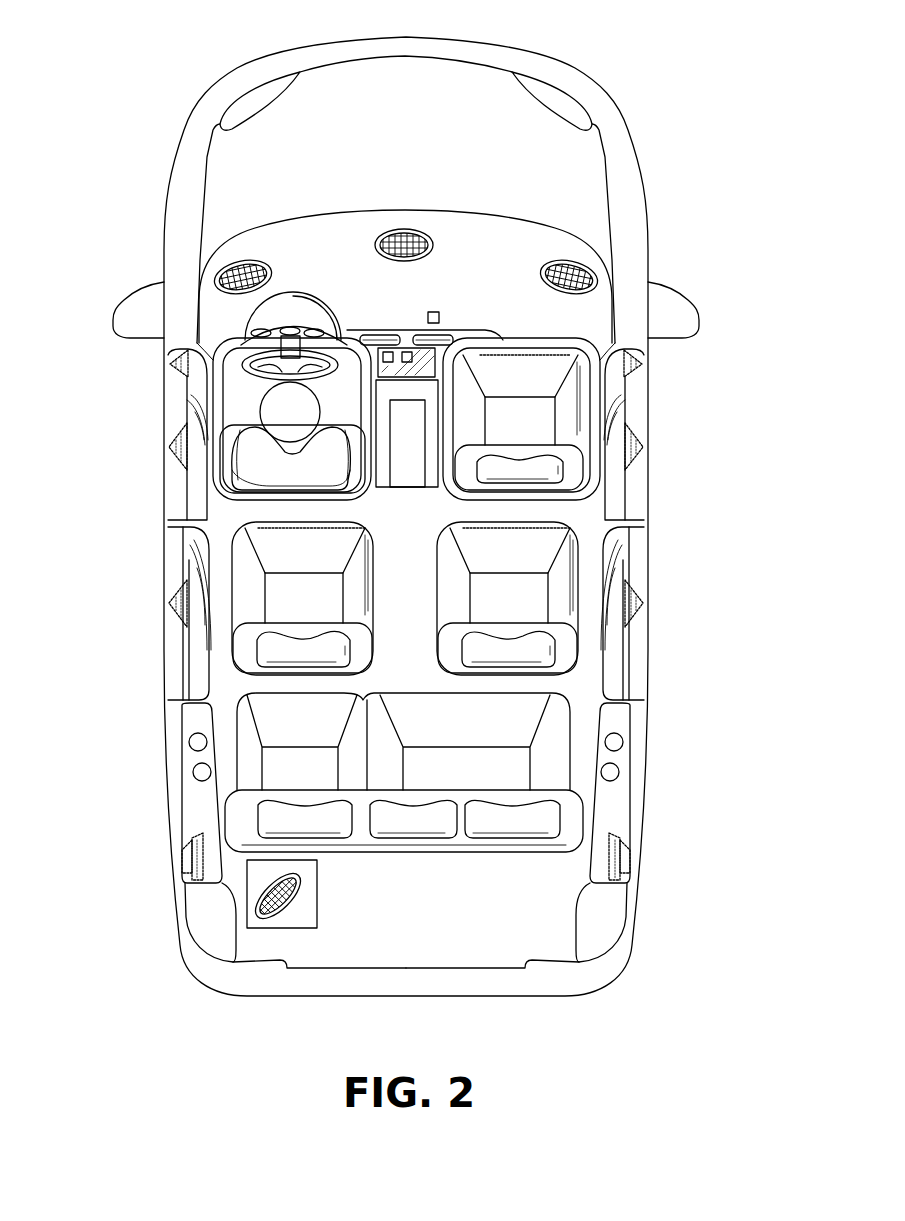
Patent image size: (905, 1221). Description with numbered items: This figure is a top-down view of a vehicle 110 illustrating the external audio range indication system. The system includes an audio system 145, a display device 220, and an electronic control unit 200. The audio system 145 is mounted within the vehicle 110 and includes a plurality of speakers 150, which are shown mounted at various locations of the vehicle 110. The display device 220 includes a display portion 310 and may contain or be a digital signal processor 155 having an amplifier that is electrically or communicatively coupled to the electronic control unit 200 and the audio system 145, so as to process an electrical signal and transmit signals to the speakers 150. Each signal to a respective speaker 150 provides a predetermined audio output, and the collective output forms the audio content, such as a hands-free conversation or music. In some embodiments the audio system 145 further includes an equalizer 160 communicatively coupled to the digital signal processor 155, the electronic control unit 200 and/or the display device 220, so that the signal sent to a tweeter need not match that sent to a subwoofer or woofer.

The vehicle 110 is at (591, 51).
The audio system 145 is at (456, 196).
The speakers 150 is at (243, 262).
The digital signal processor 155 is at (387, 351).
The equalizer 160 is at (407, 351).
The electronic control unit 200 is at (437, 306).
The display device 220 is at (452, 351).
The display portion 310 is at (437, 378).